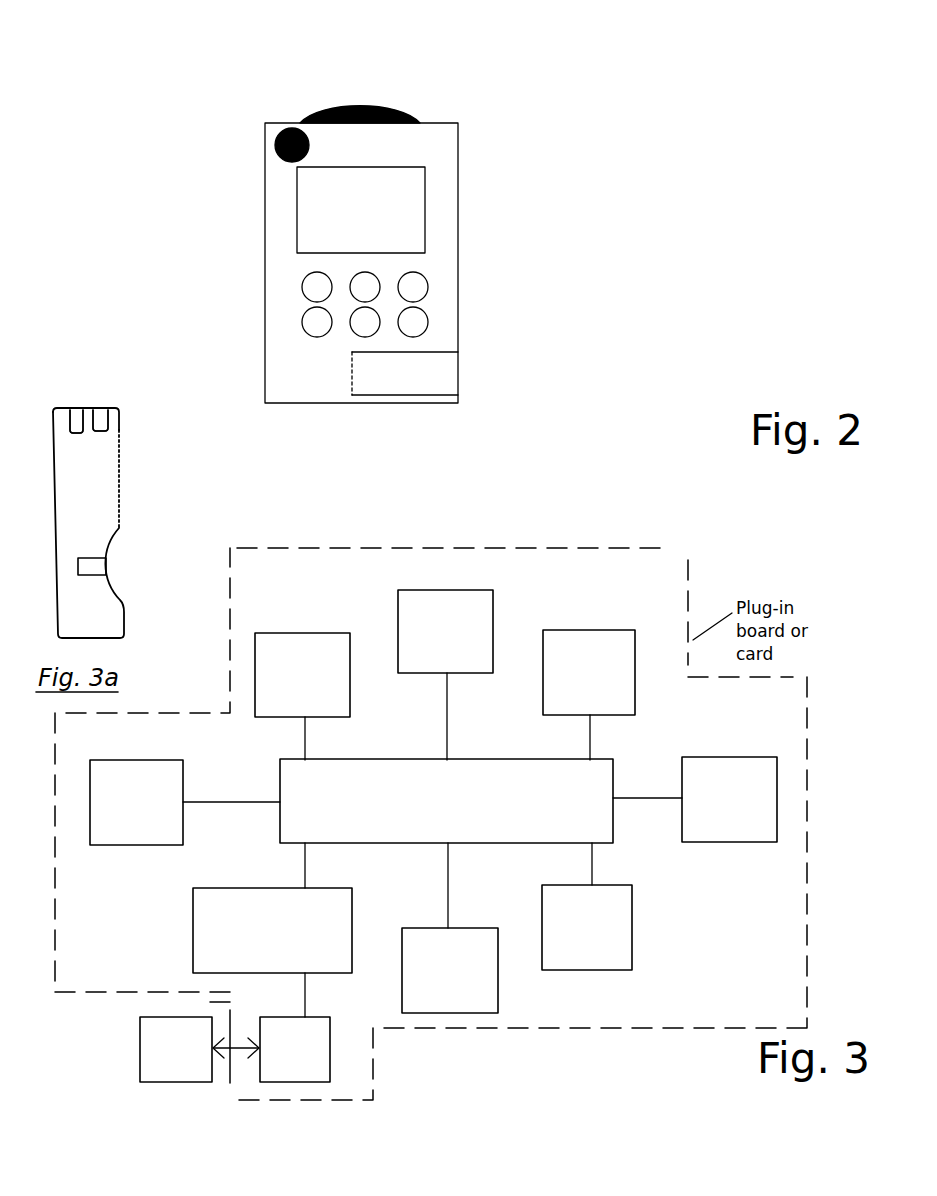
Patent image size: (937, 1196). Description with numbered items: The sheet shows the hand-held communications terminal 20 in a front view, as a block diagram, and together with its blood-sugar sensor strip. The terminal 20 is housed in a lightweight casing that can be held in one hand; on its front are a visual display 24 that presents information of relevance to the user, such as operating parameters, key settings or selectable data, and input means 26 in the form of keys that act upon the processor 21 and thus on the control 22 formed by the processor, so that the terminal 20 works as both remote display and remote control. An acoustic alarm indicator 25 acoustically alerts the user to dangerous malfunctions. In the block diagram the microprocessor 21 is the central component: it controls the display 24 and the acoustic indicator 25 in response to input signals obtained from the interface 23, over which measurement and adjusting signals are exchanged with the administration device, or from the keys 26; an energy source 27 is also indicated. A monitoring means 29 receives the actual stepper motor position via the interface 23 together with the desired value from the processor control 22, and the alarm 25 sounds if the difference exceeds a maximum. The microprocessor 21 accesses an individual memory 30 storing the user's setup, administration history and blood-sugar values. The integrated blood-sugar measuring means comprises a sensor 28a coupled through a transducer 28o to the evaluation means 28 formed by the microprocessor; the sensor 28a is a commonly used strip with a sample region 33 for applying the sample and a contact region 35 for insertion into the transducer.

In FIG. 2, the communications terminal 20 is at (458, 222).
In FIG. 2, the interface 23 is at (408, 110).
In FIG. 3, the interface 23 is at (136, 802).
In FIG. 2, the acoustic alarm indicator 25 is at (293, 120).
In FIG. 3, the acoustic alarm indicator 25 is at (589, 672).
In FIG. 2, the visual display 24 is at (400, 197).
In FIG. 3, the visual display 24 is at (302, 675).
In FIG. 2, the input means 26 is at (415, 285).
In FIG. 3, the input means 26 is at (729, 799).
In FIG. 2, the evaluation means 28 is at (410, 378).
In FIG. 3, the evaluation means 28 is at (272, 930).
In FIG. 3A, the sensor 28a is at (148, 458).
In FIG. 3, the sensor 28a is at (176, 1049).
In FIG. 3, the card reader contact unit 28o is at (295, 1049).
In FIG. 3A, the sample region 33 is at (118, 566).
In FIG. 3A, the contact region 35 is at (86, 394).
In FIG. 3, the microprocessor 21 is at (446, 801).
In FIG. 3, the control 22 is at (446, 801).
In FIG. 3, the energy source 27 is at (450, 970).
In FIG. 3, the monitoring means 29 is at (587, 927).
In FIG. 3, the memory 30 is at (445, 631).